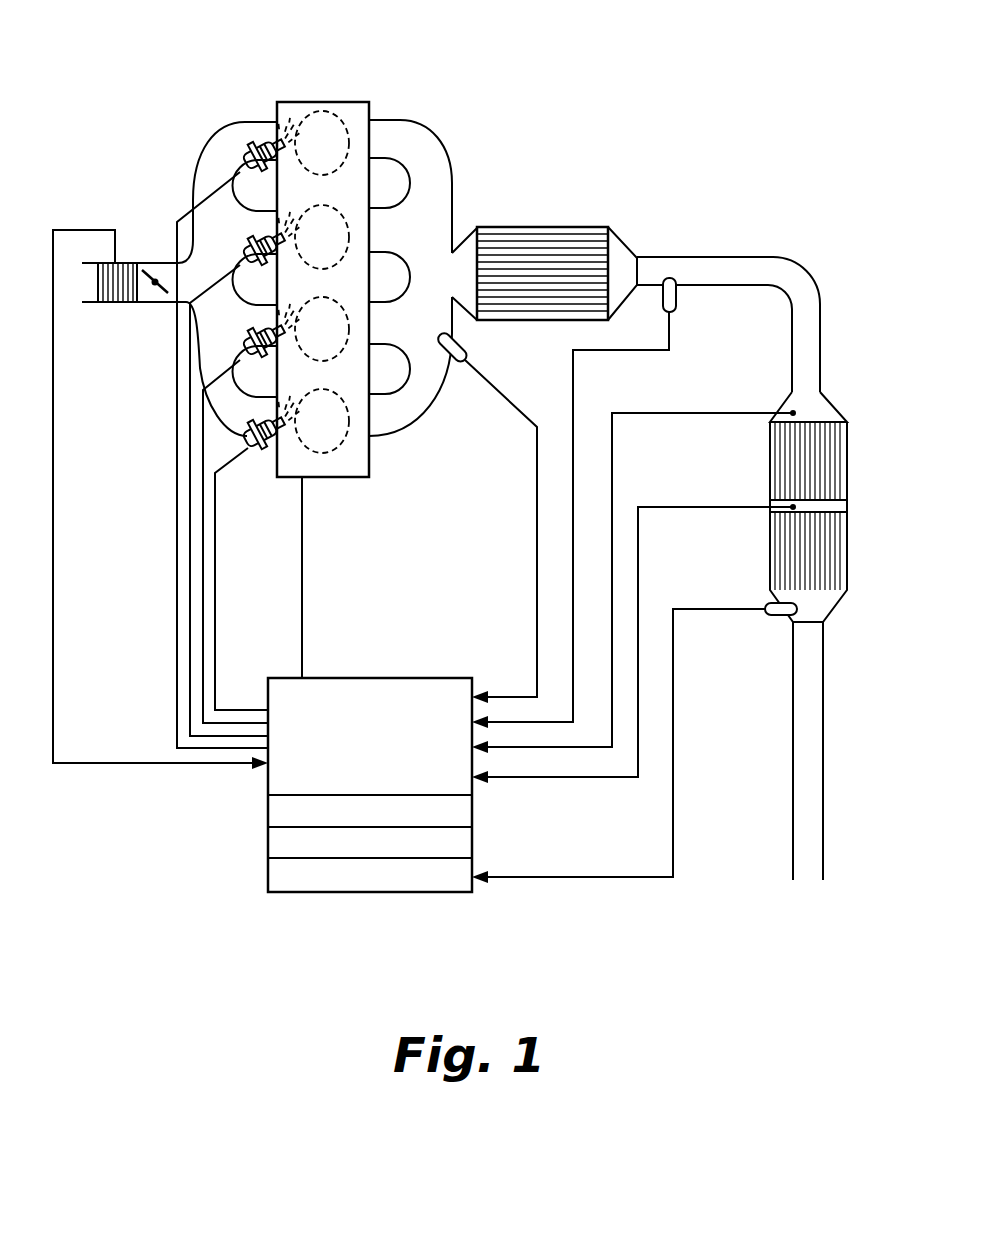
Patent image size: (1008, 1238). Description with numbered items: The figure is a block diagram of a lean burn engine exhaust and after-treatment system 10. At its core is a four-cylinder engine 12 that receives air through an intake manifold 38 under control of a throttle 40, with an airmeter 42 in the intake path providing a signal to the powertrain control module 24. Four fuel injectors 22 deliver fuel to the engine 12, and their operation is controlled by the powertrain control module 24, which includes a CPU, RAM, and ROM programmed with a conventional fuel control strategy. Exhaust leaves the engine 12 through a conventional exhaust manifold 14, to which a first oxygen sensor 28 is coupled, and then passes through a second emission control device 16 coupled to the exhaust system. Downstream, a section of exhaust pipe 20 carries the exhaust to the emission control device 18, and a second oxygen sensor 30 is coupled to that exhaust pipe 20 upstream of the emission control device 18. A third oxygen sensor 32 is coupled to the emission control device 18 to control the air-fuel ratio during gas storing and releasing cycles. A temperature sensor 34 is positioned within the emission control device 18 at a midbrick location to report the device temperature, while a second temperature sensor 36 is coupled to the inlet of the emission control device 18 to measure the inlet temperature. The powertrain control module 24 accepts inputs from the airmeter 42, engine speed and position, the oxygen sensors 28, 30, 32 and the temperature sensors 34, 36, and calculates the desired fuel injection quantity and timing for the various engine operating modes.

The lean burn engine exhaust and after-treatment system 10 is at (697, 124).
The engine 12 is at (337, 101).
The exhaust manifold 14 is at (438, 145).
The second emission control device 16 is at (579, 227).
The emission control device 18 is at (848, 450).
The exhaust pipe 20 is at (823, 352).
The fuel injector 22 is at (245, 162).
The powertrain control module 24 is at (258, 768).
The first oxygen sensor 28 is at (463, 340).
The second oxygen sensor 30 is at (677, 297).
The third oxygen sensor 32 is at (760, 603).
The temperature sensor 34 is at (763, 500).
The second temperature sensor 36 is at (763, 410).
The intake manifold 38 is at (190, 372).
The throttle 40 is at (155, 292).
The airmeter 42 is at (105, 303).